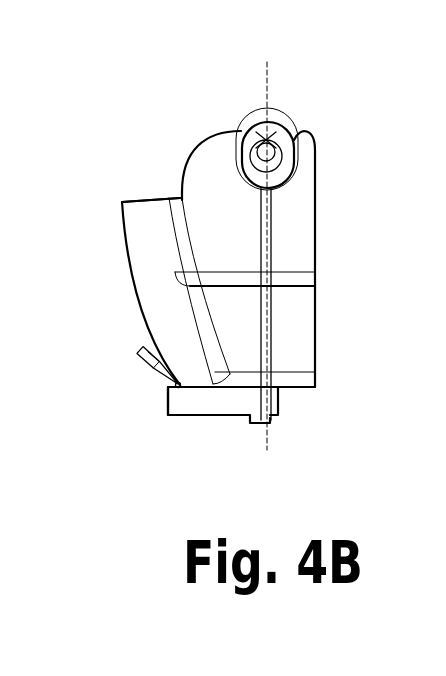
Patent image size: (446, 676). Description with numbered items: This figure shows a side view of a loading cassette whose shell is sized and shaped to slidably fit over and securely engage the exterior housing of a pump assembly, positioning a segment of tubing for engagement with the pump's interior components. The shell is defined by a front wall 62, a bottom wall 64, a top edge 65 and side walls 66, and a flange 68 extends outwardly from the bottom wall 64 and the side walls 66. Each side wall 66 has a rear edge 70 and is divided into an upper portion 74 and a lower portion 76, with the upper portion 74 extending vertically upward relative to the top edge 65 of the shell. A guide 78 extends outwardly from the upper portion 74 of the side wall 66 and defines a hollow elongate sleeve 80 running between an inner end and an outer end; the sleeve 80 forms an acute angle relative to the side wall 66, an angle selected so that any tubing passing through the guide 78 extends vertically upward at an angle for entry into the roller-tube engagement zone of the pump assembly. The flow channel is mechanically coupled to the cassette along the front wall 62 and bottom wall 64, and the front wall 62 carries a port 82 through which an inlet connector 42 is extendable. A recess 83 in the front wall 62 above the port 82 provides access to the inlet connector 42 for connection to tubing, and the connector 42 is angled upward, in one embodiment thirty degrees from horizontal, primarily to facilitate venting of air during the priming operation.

The inlet connector 42 is at (140, 355).
The front wall 62 is at (150, 245).
The bottom wall 64 is at (213, 395).
The top edge 65 is at (148, 197).
The side wall 66 is at (239, 226).
The flange 68 is at (167, 400).
The rear edge 70 is at (318, 340).
The upper portion 74 is at (303, 200).
The lower portion 76 is at (303, 300).
The guide 78 is at (243, 132).
The elongate sleeve 80 is at (283, 155).
The port 82 is at (165, 388).
The recess 83 is at (160, 353).